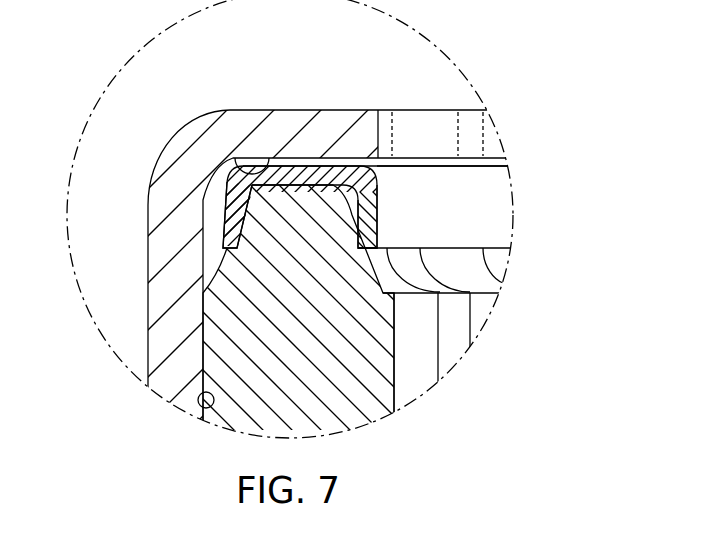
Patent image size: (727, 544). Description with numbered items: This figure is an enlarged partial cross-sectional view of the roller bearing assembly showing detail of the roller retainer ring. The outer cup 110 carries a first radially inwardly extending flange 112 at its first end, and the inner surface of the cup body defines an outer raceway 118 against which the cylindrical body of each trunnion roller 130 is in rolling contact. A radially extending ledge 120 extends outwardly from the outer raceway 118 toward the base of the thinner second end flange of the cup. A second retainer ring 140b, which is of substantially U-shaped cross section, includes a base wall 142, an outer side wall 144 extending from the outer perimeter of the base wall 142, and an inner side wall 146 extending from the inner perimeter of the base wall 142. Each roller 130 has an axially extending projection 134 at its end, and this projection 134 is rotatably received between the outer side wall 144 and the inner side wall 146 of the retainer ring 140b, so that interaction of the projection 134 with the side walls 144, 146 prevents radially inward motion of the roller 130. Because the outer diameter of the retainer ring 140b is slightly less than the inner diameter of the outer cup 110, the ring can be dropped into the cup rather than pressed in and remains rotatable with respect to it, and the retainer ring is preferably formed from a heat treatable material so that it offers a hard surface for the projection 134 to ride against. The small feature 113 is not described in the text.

The outer cup 110 is at (138, 307).
The first radially inwardly extending flange 112 is at (339, 108).
The protrusion 113 is at (270, 160).
The outer raceway 118 is at (197, 402).
The radially extending ledge 120 is at (173, 167).
The trunnion roller 130 is at (422, 373).
The axially extending projection 134 is at (373, 156).
The second retainer ring 140b is at (474, 192).
The base wall 142 is at (270, 160).
The outer side wall 144 is at (203, 207).
The inner side wall 146 is at (497, 218).